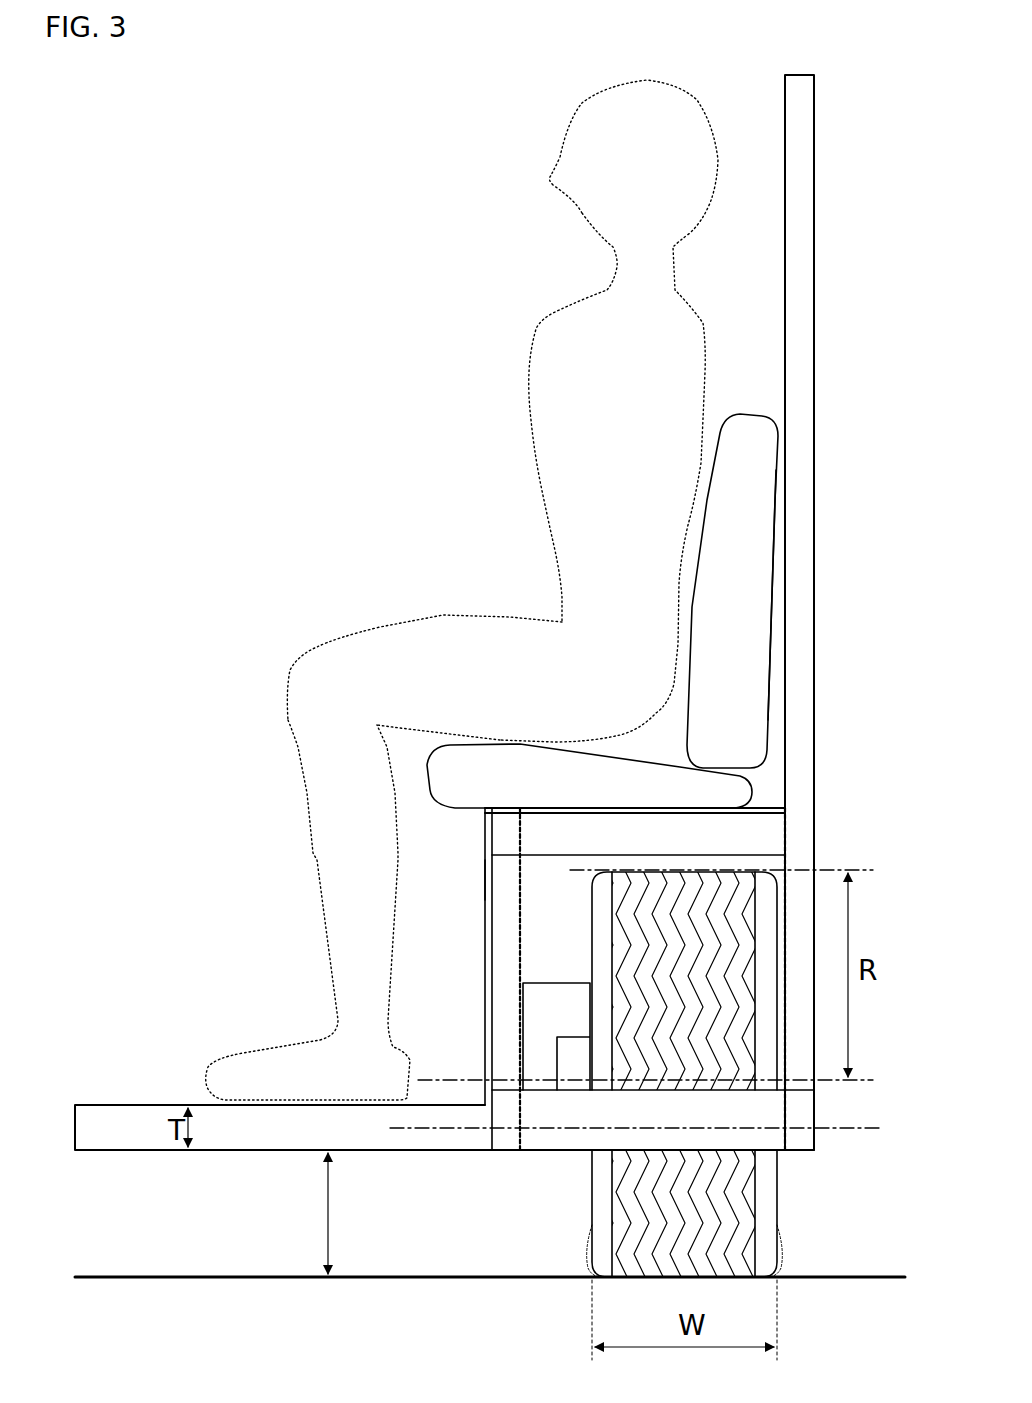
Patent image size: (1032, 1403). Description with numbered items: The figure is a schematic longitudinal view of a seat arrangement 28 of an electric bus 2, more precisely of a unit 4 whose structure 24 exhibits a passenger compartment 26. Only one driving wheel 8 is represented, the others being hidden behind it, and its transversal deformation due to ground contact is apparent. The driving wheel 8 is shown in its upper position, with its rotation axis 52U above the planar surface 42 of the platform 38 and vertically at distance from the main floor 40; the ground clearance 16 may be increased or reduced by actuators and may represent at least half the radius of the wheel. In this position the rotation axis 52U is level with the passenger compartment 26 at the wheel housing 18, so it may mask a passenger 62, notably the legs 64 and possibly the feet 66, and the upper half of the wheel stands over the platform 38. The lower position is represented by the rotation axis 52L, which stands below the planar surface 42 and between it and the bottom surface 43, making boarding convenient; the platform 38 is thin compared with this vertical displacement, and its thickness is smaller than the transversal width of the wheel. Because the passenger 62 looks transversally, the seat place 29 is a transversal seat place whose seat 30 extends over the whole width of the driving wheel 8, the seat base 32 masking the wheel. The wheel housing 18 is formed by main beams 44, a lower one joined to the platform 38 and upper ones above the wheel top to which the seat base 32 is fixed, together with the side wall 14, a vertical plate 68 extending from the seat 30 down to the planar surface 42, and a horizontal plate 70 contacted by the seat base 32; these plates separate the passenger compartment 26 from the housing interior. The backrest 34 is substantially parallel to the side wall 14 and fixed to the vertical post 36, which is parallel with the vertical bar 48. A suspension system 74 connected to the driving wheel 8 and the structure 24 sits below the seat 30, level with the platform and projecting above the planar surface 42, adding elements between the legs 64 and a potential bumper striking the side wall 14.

The electric bus 2 is at (92, 124).
The unit 4 is at (182, 124).
The structure 24 is at (287, 124).
The passenger compartment 26 is at (377, 124).
The seat arrangement 28 is at (467, 124).
The driving wheel 8 is at (690, 997).
The side wall 14 is at (816, 682).
The ground clearance 16 is at (326, 1224).
The wheel housing 18 is at (584, 914).
The seat place 29 is at (280, 527).
The seat 30 is at (527, 636).
The seat base 32 is at (521, 794).
The backrest 34 is at (758, 621).
The vertical post 36 is at (803, 713).
The platform 38 is at (276, 1144).
The main floor 40 is at (160, 1010).
The planar surface 42 is at (101, 1104).
The bottom surface 43 is at (127, 1152).
The main beam 44 is at (505, 840).
The vertical bar 48 is at (508, 980).
The rotation axis 52U is at (450, 1078).
The rotation axis 52L is at (412, 1134).
The passenger 62 is at (638, 406).
The legs 64 is at (376, 854).
The feet 66 is at (361, 1094).
The vertical plate 68 is at (486, 880).
The horizontal plate 70 is at (765, 806).
The suspension system 74 is at (564, 1017).